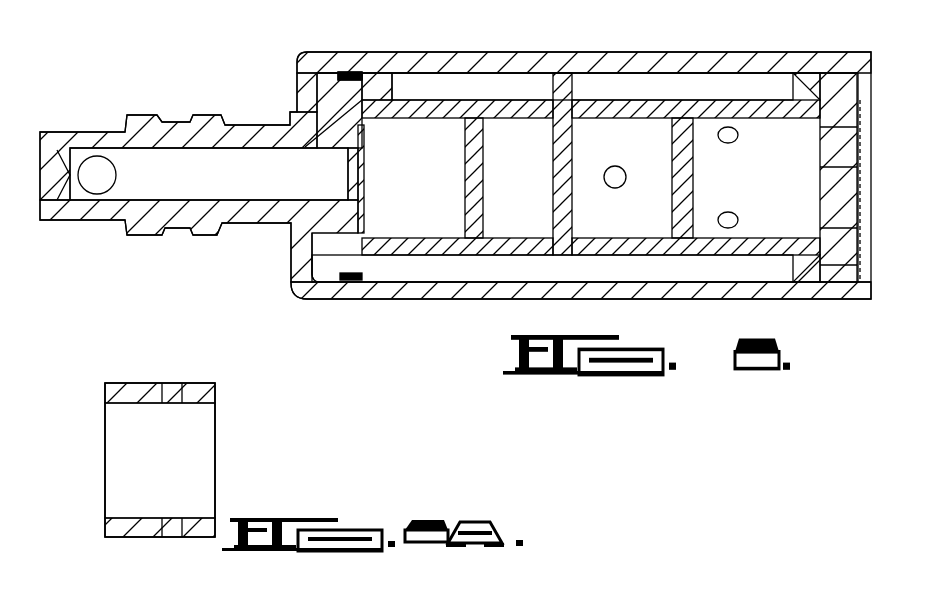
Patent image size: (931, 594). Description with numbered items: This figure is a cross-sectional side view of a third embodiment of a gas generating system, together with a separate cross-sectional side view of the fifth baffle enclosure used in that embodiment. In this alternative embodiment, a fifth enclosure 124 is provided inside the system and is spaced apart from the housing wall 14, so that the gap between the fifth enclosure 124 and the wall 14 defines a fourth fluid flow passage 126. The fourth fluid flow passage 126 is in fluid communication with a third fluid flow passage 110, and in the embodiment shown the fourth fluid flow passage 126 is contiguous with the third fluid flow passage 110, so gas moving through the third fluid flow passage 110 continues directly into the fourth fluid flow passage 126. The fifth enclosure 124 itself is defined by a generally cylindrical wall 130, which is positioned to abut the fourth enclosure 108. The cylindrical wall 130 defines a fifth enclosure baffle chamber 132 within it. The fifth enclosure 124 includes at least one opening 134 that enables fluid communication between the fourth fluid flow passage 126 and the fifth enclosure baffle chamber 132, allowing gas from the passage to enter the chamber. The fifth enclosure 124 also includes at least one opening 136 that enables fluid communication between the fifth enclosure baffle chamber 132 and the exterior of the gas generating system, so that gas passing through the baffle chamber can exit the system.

In FIG. 8, the housing wall 14 is at (417, 62).
In FIG. 8, the fourth enclosure 108 is at (548, 264).
In FIG. 8, the third fluid flow passage 110 is at (528, 84).
In FIG. 8, the fifth enclosure 124 is at (455, 95).
In FIG. 8A, the fifth enclosure 124 is at (118, 538).
In FIG. 8, the fourth fluid flow passage 126 is at (408, 82).
In FIG. 8A, the cylindrical wall 130 is at (215, 387).
In FIG. 8A, the fifth enclosure baffle chamber 132 is at (200, 432).
In FIG. 8A, the opening 134 is at (167, 393).
In FIG. 8A, the opening 136 is at (161, 449).